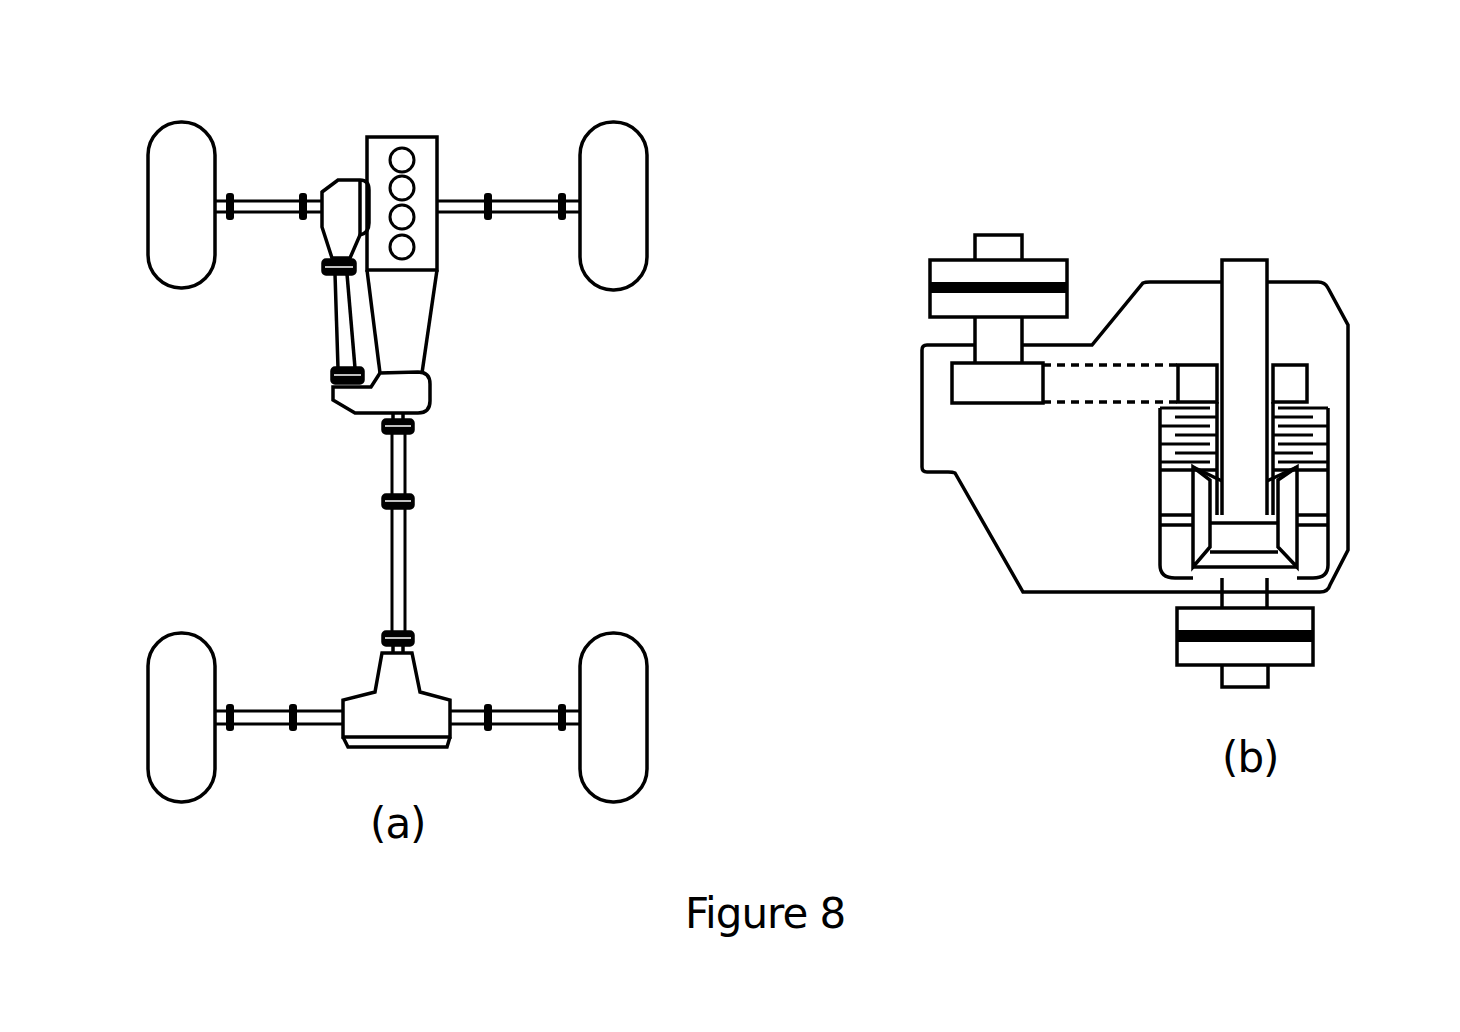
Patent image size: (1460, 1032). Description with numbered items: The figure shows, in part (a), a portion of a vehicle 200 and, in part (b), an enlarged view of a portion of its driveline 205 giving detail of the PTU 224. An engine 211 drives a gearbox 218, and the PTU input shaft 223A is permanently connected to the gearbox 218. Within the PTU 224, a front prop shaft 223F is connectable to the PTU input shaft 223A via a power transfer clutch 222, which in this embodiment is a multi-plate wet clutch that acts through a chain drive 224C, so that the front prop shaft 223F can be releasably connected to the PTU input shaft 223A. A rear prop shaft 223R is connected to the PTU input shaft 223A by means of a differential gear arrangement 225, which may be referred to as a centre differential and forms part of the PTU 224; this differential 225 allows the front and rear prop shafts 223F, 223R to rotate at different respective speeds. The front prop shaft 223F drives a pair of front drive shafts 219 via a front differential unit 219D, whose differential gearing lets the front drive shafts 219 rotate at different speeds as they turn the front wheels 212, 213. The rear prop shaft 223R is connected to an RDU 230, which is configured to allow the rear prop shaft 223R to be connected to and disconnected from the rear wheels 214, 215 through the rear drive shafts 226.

The vehicle 200 is at (575, 72).
The driveline 205 is at (478, 474).
The engine 211 is at (425, 148).
The front left wheel 212 is at (176, 150).
The front right wheel 213 is at (624, 150).
The rear wheel 214 is at (176, 770).
The rear wheel 215 is at (624, 770).
The gearbox 218 is at (414, 336).
The front drive shafts 219 is at (275, 203).
The front differential unit 219D is at (340, 178).
The power transfer clutch 222 is at (1330, 421).
The PTU input shaft 223A is at (1260, 274).
The front prop shaft 223F is at (338, 316).
The rear prop shaft 223R is at (400, 546).
The PTU 224 is at (338, 398).
The chain drive 224C is at (1070, 364).
The differential gear arrangement 225 is at (1315, 539).
The rear half shafts 226 is at (266, 727).
The RDU 230 is at (420, 672).